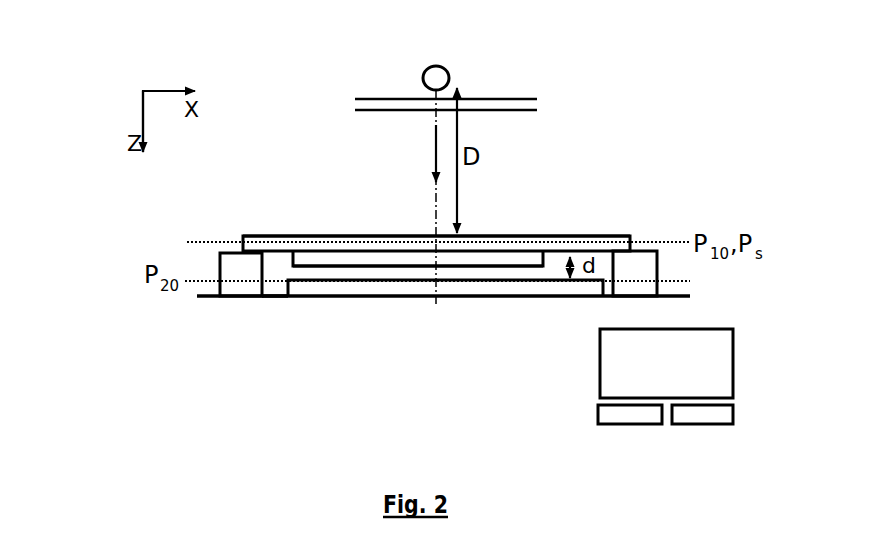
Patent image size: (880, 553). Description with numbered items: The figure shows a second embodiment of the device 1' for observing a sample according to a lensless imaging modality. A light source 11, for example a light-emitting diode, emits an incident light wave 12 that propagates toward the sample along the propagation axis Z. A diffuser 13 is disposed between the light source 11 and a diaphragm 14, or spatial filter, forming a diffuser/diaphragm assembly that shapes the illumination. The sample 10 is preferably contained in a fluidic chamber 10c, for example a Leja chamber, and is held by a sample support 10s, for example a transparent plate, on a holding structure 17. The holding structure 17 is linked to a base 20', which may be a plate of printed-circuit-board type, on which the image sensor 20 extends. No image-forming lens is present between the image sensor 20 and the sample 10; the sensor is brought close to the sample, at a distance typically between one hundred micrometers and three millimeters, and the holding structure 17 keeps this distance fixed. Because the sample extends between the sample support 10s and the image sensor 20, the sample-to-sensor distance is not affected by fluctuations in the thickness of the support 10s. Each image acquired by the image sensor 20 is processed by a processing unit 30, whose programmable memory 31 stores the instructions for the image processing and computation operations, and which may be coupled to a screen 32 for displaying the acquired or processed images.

The device 1' is at (68, 73).
The light source 11 is at (417, 66).
The incident light wave 12 is at (421, 153).
The diffuser 13 is at (354, 97).
The diaphragm 14 is at (354, 111).
The sample 10 is at (331, 257).
The sample support 10s is at (240, 238).
The fluidic chamber 10c is at (528, 259).
The holding structure 17 is at (238, 283).
The image sensor 20 is at (443, 314).
The base 20' is at (288, 327).
The processing unit 30 is at (616, 415).
The programmable memory 31 is at (719, 415).
The screen 32 is at (704, 341).